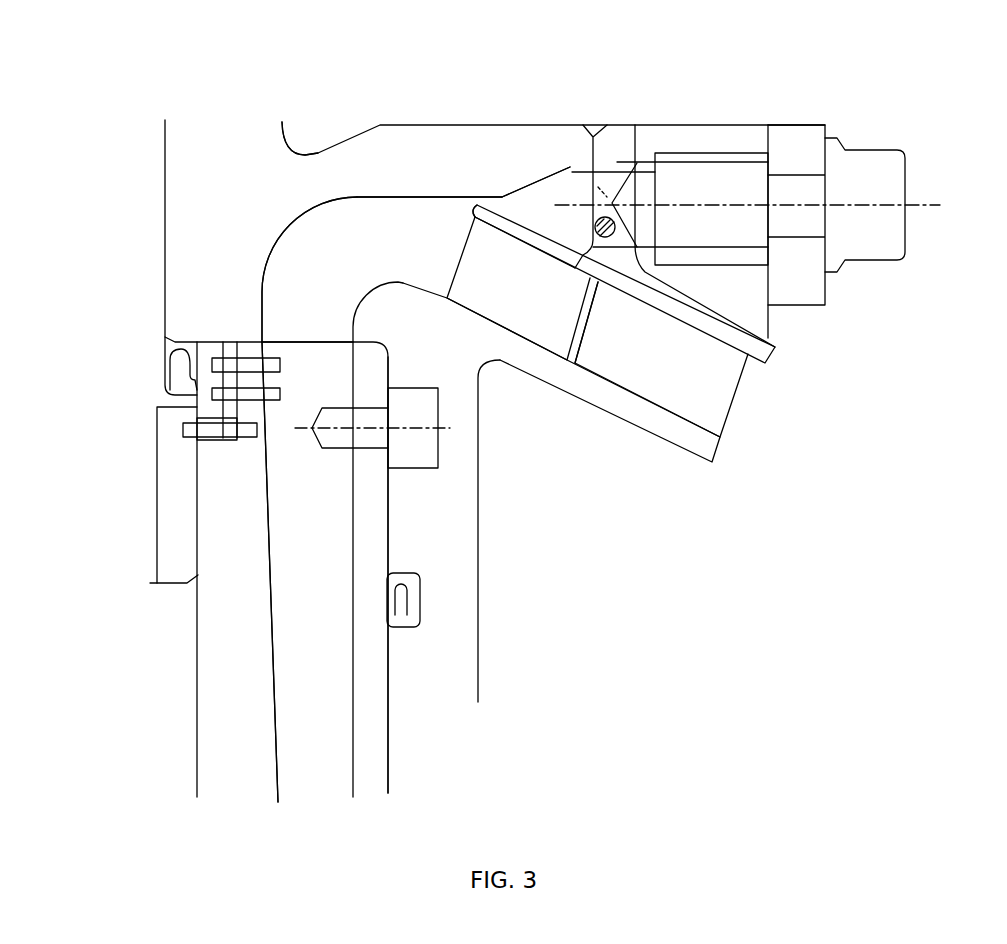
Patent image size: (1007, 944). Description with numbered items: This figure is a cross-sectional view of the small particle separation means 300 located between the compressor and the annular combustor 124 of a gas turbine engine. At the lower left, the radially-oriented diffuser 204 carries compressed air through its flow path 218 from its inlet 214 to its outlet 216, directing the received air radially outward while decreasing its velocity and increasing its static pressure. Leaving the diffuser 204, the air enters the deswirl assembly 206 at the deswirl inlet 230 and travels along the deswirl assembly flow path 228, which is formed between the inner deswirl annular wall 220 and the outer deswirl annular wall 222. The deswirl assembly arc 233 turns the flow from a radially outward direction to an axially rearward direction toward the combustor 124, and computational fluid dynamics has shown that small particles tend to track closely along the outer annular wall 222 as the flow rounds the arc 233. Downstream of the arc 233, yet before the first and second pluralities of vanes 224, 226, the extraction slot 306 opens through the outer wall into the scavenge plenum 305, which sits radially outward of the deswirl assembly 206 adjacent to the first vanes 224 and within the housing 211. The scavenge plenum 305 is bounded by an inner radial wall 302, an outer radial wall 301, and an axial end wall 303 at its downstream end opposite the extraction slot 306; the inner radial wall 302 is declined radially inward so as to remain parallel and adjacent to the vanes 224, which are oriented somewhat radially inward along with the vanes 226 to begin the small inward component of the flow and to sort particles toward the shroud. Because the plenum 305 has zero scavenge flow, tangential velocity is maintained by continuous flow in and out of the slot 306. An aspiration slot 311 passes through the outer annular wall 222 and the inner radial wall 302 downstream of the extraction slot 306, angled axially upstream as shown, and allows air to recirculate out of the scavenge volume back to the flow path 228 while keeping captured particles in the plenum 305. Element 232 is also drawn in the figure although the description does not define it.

The small particle separation means 300 is at (749, 154).
The deswirl assembly 206 is at (553, 200).
The compressor housing 211 is at (250, 118).
The deswirl assembly arc 233 is at (409, 153).
The outer deswirl annular wall 222 is at (292, 228).
The deswirl assembly flow path 228 is at (382, 257).
The outer radial wall 301 is at (558, 168).
The axial end wall 303 is at (588, 192).
The scavenge plenum 305 is at (586, 232).
The inner radial wall 302 is at (518, 222).
The extraction slot 306 is at (470, 208).
The aspiration slot 311 is at (527, 233).
The first plurality of vanes 224 is at (565, 329).
The second plurality of vanes 226 is at (682, 376).
The bottom plate 232 is at (737, 400).
The inner deswirl annular wall 220 is at (400, 283).
The outlet 216 is at (283, 340).
The deswirl inlet 230 is at (318, 342).
The flow path 218 is at (334, 540).
The diffuser 204 is at (201, 572).
The inlet 214 is at (293, 862).
The annular combustor 124 is at (905, 609).